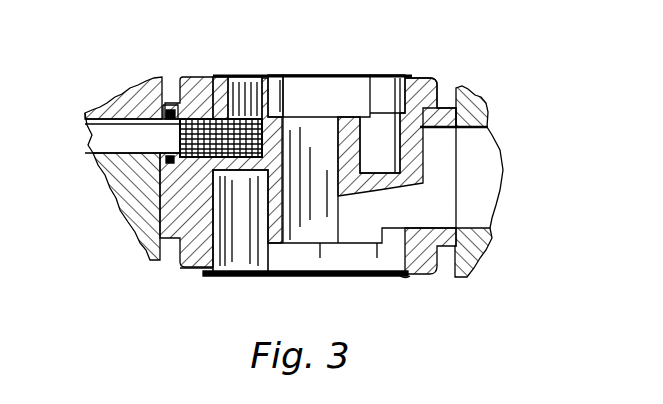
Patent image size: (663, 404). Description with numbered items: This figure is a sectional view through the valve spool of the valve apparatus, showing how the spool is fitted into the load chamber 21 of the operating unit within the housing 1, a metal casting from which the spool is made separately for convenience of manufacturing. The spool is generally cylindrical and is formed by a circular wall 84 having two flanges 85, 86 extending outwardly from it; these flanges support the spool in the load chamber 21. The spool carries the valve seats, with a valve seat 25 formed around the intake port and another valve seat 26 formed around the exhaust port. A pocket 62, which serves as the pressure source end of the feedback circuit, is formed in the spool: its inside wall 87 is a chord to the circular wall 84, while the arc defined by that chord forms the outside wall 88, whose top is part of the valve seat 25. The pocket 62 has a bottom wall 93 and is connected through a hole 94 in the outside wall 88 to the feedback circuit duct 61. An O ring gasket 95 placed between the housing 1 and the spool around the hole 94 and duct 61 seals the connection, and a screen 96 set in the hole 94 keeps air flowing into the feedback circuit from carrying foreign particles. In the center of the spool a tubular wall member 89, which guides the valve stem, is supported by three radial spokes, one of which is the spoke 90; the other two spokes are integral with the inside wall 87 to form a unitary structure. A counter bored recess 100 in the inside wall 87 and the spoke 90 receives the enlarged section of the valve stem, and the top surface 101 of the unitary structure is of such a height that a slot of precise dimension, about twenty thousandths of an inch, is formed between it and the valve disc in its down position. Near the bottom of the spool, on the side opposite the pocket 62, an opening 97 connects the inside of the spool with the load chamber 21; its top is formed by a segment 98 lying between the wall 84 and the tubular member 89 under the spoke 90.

The housing 1 is at (123, 102).
The duct 61 is at (102, 142).
The hole 94 is at (178, 122).
The O ring gasket 95 is at (168, 108).
The screen 96 is at (195, 118).
The outside wall 88 is at (220, 85).
The pocket 62 is at (236, 90).
The inside wall 87 is at (257, 78).
The top surface 101 is at (280, 72).
The counter bored recess 100 is at (320, 97).
The radial spoke member 90 is at (383, 88).
The valve seat 25 is at (417, 74).
The flange 85 is at (444, 112).
The wall 84 is at (203, 238).
The bottom wall 93 is at (243, 172).
The segment 98 is at (378, 170).
The opening 97 is at (405, 198).
The flange 86 is at (422, 237).
The load chamber 21 is at (485, 187).
The tubular wall member 89 is at (338, 243).
The valve seat 26 is at (402, 278).